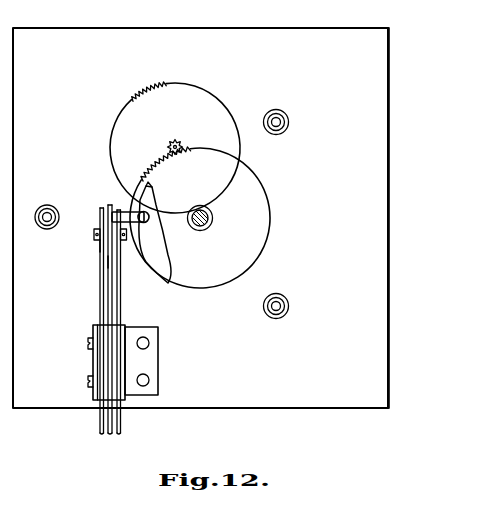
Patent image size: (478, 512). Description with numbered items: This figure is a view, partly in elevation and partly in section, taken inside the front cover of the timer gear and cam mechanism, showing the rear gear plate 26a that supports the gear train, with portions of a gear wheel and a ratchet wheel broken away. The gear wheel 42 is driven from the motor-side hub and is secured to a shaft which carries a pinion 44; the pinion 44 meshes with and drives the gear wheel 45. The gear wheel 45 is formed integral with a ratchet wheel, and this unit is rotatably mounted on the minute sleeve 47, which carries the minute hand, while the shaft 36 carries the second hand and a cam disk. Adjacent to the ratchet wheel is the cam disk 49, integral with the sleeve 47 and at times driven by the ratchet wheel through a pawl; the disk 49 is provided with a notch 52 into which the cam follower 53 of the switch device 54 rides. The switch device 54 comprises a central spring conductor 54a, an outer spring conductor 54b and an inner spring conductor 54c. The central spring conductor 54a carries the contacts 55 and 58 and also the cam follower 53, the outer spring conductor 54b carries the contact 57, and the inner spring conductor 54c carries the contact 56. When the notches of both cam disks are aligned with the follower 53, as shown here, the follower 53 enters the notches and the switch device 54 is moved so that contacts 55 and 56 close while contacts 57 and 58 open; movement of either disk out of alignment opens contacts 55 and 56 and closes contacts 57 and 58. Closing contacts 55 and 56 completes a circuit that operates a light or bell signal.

The rear gear plate 26a is at (378, 75).
The gear wheel 42 is at (212, 102).
The pinion 44 is at (192, 113).
The gear wheel 45 is at (263, 207).
The minute sleeve 47 is at (200, 205).
The shaft 36 is at (207, 227).
The cam disk 49 is at (152, 242).
The notch 52 is at (151, 193).
The cam follower 53 is at (143, 210).
The switch device 54 is at (89, 356).
The central spring conductor 54a is at (111, 237).
The outer spring conductor 54b is at (101, 302).
The inner spring conductor 54c is at (120, 299).
The contact 55 is at (106, 245).
The contact 56 is at (107, 264).
The contact 57 is at (108, 235).
The contact 58 is at (111, 232).